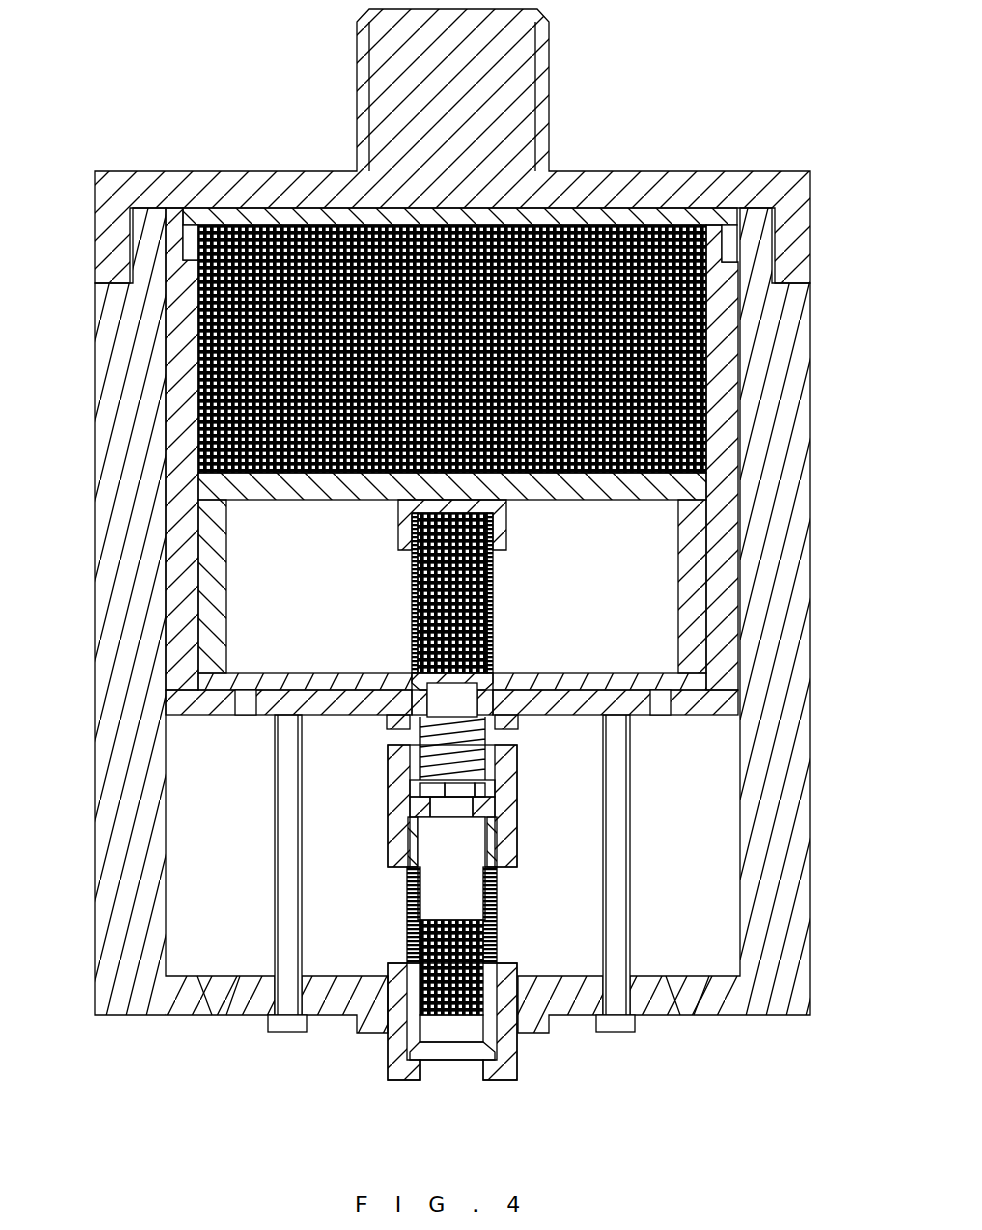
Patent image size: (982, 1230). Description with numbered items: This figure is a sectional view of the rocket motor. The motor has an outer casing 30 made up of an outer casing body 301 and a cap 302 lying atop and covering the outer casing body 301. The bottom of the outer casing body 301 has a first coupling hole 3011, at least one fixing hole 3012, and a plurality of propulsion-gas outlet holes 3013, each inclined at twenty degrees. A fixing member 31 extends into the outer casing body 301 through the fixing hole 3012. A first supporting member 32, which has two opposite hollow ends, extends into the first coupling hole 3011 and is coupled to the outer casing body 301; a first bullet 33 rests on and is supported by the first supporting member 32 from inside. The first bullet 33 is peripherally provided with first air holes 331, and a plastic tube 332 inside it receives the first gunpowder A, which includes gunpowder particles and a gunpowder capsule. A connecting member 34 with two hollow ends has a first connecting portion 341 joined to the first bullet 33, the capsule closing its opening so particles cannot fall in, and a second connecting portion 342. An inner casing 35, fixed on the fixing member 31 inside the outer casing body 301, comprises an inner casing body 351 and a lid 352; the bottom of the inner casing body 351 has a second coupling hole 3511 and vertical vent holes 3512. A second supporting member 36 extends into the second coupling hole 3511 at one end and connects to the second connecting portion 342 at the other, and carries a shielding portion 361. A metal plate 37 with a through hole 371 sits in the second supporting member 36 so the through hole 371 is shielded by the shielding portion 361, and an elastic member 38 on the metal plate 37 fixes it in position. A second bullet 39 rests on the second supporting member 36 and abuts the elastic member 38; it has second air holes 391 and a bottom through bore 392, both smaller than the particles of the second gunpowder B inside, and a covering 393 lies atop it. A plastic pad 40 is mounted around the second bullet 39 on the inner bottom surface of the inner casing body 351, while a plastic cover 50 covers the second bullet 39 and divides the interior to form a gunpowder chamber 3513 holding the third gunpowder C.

The outer casing 30 is at (482, 569).
The outer casing body 301 is at (762, 968).
The first coupling hole 3011 is at (370, 985).
The fixing hole 3012 is at (265, 990).
The propulsion-gas outlet holes 3013 is at (220, 1005).
The cap 302 is at (610, 175).
The fixing member 31 is at (290, 1023).
The first supporting member 32 is at (500, 1045).
The first bullet 33 is at (463, 1050).
The first air holes 331 is at (520, 965).
The plastic tube 332 is at (382, 1040).
The connecting member 34 is at (339, 976).
The first connecting portion 341 is at (497, 927).
The second connecting portion 342 is at (455, 820).
The inner casing 35 is at (450, 453).
The inner casing body 351 is at (185, 455).
The second coupling hole 3511 is at (410, 717).
The vertical vent holes 3512 is at (245, 705).
The gunpowder chamber 3513 is at (195, 375).
The lid 352 is at (250, 215).
The second supporting member 36 is at (487, 772).
The shielding portion 361 is at (510, 860).
The metal plate 37 is at (417, 783).
The through hole 371 is at (413, 800).
The elastic member 38 is at (475, 790).
The second bullet 39 is at (628, 588).
The second air holes 391 is at (500, 567).
The through bore 392 is at (500, 657).
The covering 393 is at (500, 517).
The plastic pad 40 is at (667, 683).
The plastic cover 50 is at (215, 540).
The first gunpowder A is at (458, 1040).
The second gunpowder B is at (500, 622).
The third gunpowder C is at (185, 305).